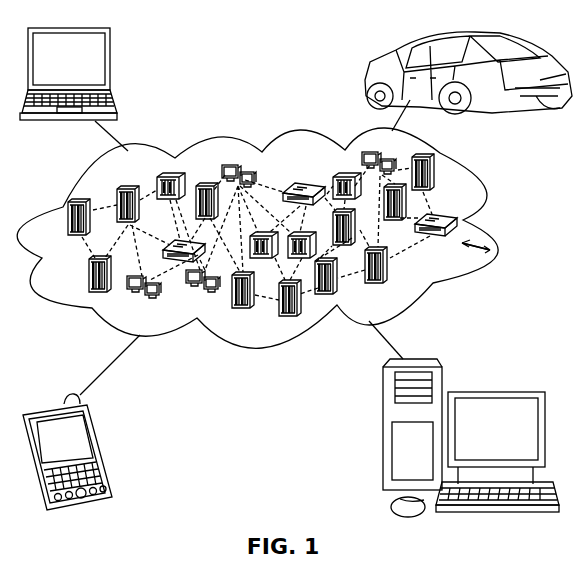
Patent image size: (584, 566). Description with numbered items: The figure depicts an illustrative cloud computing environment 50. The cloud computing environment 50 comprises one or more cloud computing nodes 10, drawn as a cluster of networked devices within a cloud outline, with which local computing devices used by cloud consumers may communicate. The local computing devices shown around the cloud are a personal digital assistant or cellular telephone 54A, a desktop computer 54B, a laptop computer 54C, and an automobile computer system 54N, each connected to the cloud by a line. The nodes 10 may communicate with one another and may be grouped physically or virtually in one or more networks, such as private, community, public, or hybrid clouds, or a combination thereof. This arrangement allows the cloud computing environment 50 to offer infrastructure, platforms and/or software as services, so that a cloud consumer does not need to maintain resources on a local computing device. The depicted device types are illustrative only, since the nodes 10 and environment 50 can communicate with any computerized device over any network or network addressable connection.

The cloud computing nodes 10 is at (480, 252).
The cloud computing environment 50 is at (494, 229).
The personal digital assistant or cellular telephone 54A is at (103, 447).
The desktop computer 54B is at (493, 391).
The laptop computer 54C is at (110, 64).
The automobile computer system 54N is at (367, 75).